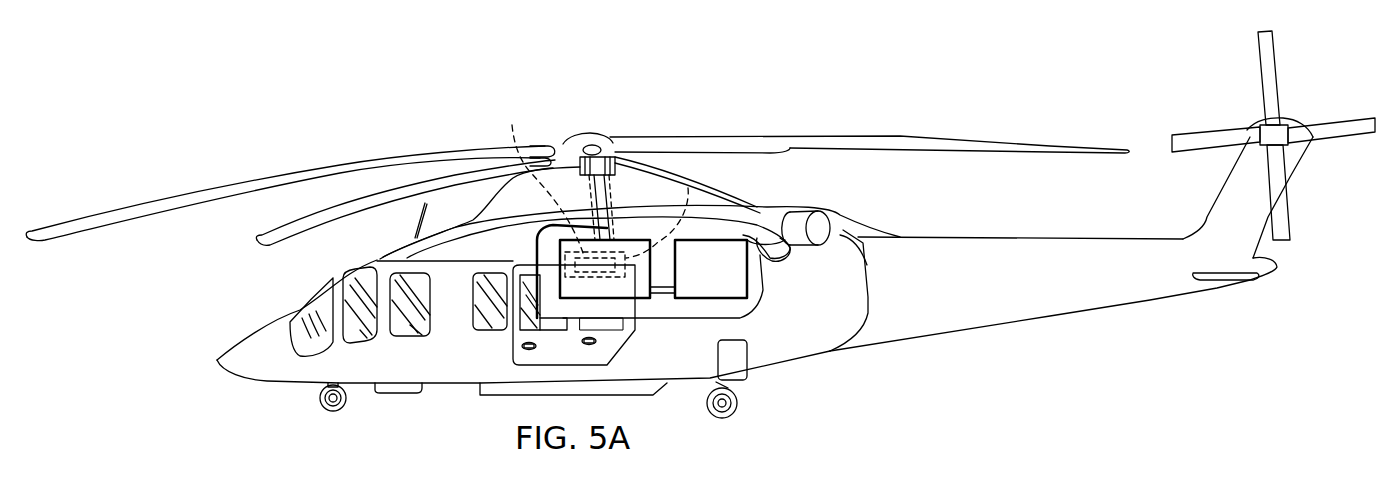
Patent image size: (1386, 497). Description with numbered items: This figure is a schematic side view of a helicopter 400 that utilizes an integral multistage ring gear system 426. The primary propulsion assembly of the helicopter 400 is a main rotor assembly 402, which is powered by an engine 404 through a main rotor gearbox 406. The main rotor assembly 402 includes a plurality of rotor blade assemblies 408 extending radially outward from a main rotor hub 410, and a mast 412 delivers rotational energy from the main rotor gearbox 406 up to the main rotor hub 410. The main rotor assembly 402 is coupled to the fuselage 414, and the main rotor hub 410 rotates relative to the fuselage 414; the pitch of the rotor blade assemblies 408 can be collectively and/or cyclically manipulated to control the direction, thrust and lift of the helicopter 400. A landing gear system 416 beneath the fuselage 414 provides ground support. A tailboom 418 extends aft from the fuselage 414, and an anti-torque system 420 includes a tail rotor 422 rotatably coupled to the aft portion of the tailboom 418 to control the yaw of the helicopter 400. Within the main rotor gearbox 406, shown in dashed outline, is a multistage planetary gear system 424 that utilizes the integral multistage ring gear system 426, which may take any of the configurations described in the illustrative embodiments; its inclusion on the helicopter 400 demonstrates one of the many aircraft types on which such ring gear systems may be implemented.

The helicopter 400 is at (659, 94).
The main rotor assembly 402 is at (591, 123).
The engine 404 is at (750, 282).
The main rotor gearbox 406 is at (643, 302).
The rotor blade assemblies 408 is at (278, 176).
The main rotor hub 410 is at (580, 135).
The mast 412 is at (607, 228).
The fuselage 414 is at (440, 385).
The landing gear system 416 is at (738, 404).
The tailboom 418 is at (1002, 325).
The anti-torque system 420 is at (1244, 106).
The tail rotor 422 is at (1277, 67).
The multistage planetary gear system 424 is at (688, 188).
The integral multistage ring gear system 426 is at (535, 174).